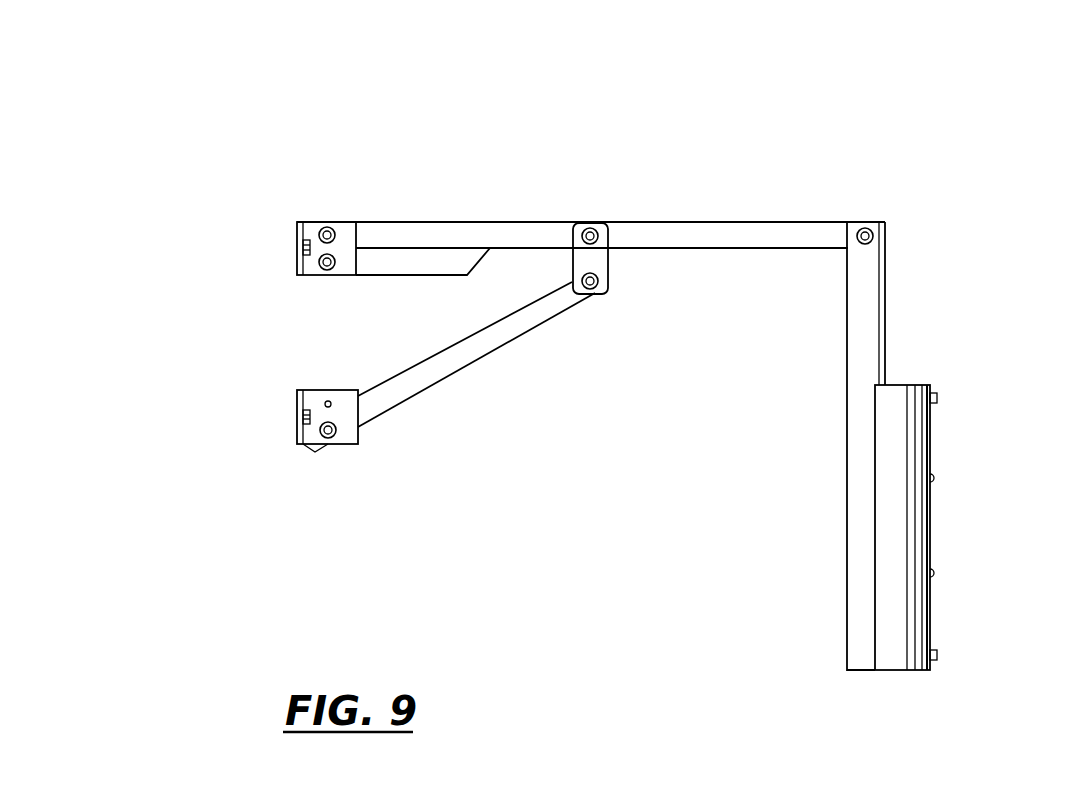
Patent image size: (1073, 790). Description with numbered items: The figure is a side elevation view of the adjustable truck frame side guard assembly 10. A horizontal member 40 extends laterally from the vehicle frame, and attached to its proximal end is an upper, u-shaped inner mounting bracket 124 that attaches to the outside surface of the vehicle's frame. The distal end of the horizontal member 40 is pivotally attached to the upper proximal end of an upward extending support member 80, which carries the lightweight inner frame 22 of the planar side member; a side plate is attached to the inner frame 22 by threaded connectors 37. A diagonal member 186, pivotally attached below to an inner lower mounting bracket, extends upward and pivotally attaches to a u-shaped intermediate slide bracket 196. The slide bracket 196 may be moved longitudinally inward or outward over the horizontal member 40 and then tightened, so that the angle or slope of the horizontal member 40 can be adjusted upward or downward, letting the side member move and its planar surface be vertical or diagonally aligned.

The side guard assembly 10 is at (265, 112).
The inner frame 22 is at (945, 400).
The threaded connectors 37 is at (297, 413).
The horizontal member 40 is at (512, 221).
The support member 80 is at (885, 313).
The upper inner mounting bracket 124 is at (296, 222).
The diagonal member 186 is at (488, 355).
The intermediate slide bracket 196 is at (608, 268).